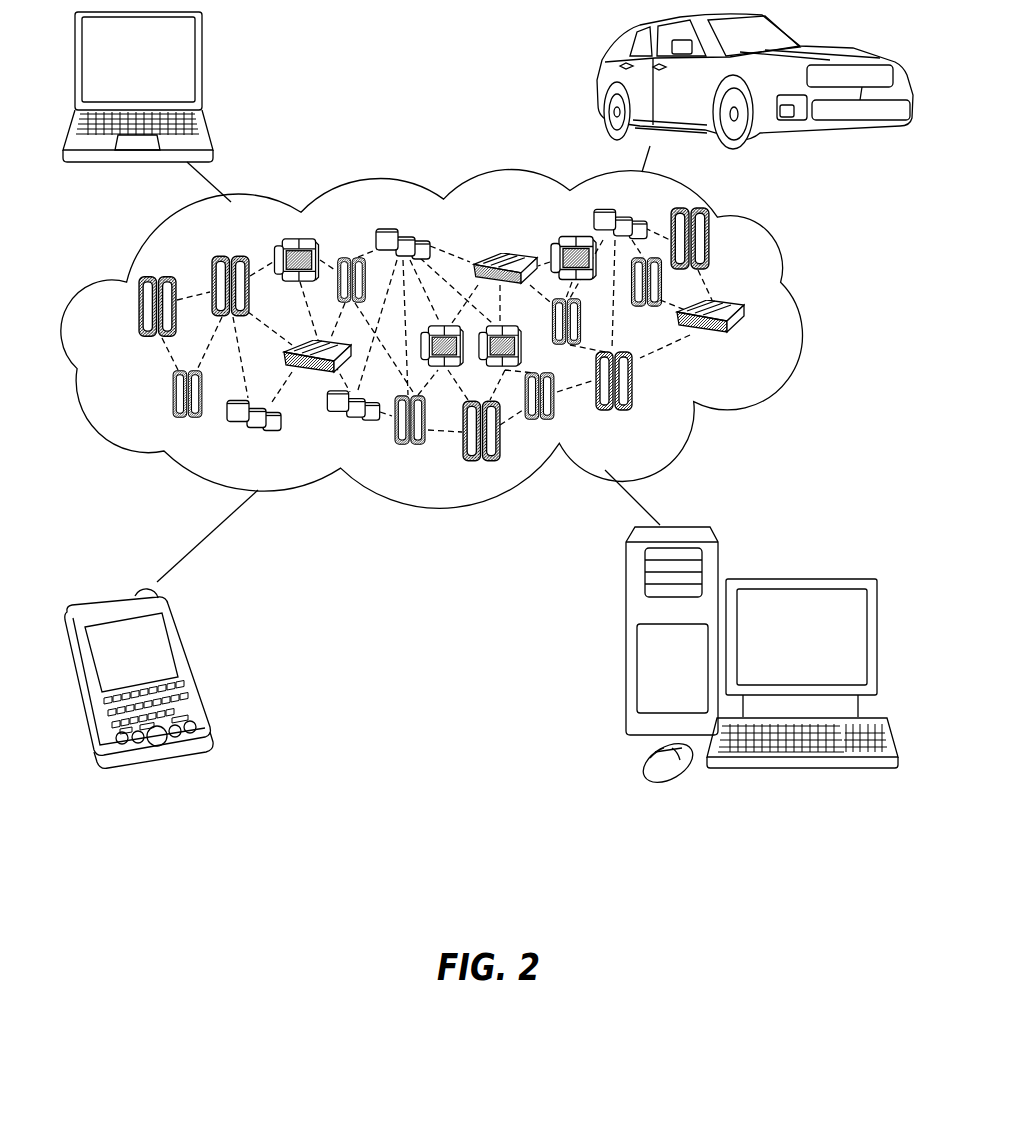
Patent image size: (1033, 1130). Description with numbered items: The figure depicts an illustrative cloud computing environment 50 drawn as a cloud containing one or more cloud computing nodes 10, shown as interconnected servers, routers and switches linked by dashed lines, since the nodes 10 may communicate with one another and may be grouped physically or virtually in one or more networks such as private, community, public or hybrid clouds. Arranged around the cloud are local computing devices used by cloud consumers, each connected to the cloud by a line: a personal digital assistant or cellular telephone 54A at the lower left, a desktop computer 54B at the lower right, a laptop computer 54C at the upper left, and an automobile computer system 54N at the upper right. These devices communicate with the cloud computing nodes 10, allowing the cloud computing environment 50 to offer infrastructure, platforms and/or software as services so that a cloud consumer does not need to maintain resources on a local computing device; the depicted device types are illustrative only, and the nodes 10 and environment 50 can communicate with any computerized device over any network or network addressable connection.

The cloud computing environment 50 is at (798, 316).
The cloud computing nodes 10 is at (745, 343).
The personal digital assistant (PDA) or cellular telephone 54A is at (190, 662).
The desktop computer 54B is at (800, 578).
The laptop computer 54C is at (202, 68).
The automobile computer system 54N is at (602, 82).